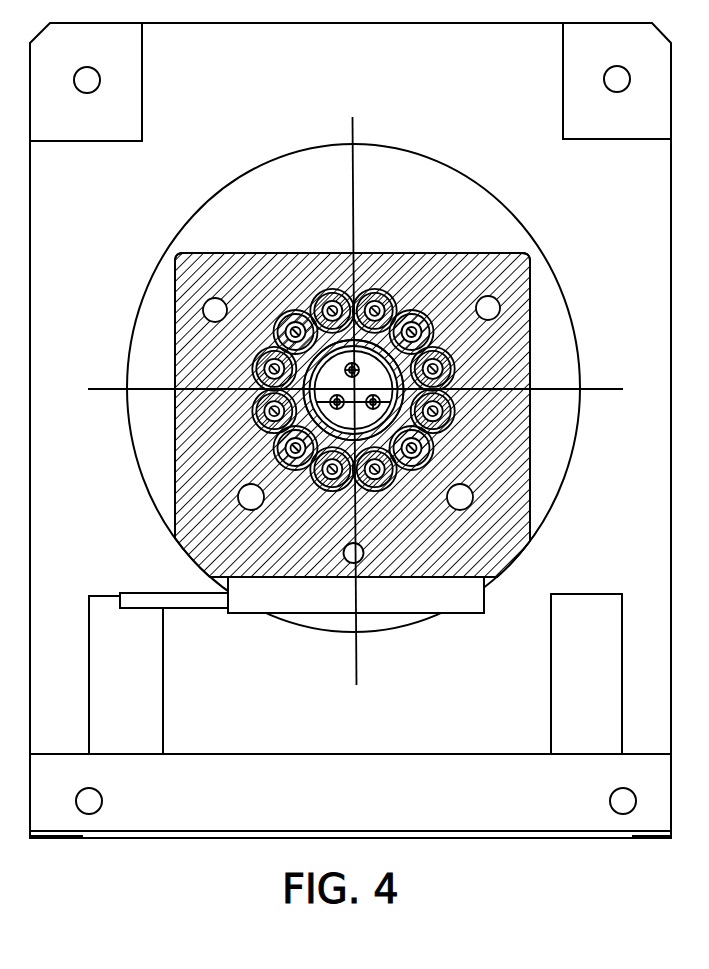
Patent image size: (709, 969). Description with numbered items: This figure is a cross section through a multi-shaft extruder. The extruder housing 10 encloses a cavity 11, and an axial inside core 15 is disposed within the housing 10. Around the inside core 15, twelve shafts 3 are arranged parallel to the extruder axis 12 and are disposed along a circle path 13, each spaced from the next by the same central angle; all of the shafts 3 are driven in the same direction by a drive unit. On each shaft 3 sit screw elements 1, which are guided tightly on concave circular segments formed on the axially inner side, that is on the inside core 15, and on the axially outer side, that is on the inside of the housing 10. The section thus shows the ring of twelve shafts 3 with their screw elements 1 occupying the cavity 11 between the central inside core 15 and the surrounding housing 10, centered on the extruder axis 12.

The screw elements 1 is at (456, 331).
The shafts 3 is at (542, 408).
The housing 10 is at (500, 505).
The cavity 11 is at (536, 425).
The extruder axis 12 is at (348, 386).
The circle path 13 is at (460, 328).
The inside core 15 is at (300, 397).